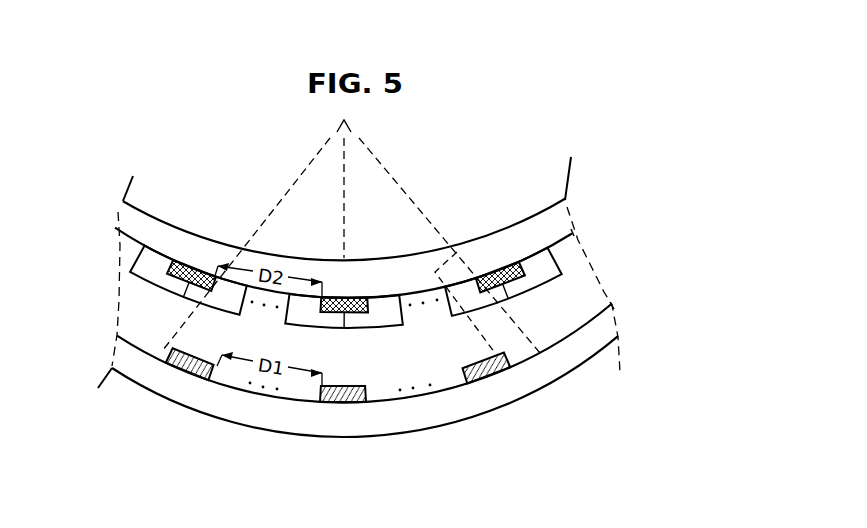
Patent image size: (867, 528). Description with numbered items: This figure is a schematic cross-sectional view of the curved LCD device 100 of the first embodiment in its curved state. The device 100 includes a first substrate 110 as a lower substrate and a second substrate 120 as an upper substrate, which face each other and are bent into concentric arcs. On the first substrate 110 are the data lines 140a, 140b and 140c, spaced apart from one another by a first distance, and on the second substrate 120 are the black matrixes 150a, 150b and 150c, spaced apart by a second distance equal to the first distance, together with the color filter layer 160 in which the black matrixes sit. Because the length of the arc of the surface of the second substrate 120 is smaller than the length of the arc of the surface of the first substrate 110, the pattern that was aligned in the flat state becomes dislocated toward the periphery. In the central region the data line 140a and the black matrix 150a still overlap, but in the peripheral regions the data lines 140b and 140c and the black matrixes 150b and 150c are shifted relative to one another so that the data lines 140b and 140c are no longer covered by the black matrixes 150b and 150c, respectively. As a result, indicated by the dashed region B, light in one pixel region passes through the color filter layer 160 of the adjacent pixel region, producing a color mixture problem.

The curved LCD device 100 is at (518, 145).
The first substrate 110 is at (535, 387).
The second substrate 120 is at (344, 248).
The data line 140a is at (340, 403).
The data line 140b is at (186, 371).
The data line 140c is at (478, 384).
The black matrix 150a is at (347, 296).
The black matrix 150b is at (200, 266).
The black matrix 150c is at (499, 268).
The color filter layer 160 is at (297, 296).
The B part B is at (457, 256).